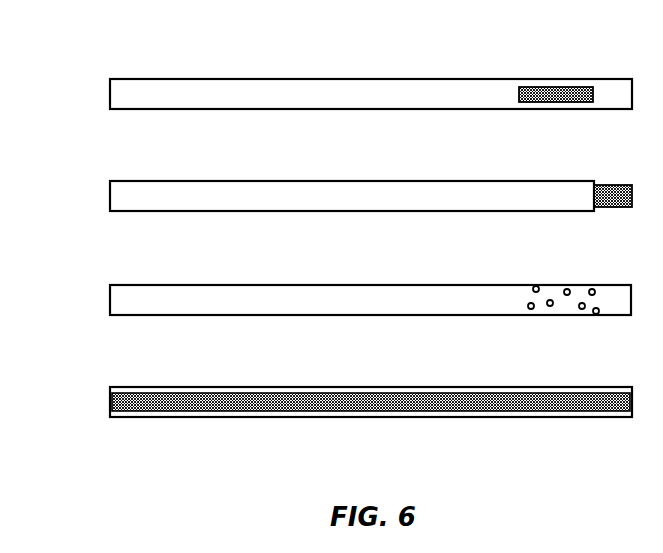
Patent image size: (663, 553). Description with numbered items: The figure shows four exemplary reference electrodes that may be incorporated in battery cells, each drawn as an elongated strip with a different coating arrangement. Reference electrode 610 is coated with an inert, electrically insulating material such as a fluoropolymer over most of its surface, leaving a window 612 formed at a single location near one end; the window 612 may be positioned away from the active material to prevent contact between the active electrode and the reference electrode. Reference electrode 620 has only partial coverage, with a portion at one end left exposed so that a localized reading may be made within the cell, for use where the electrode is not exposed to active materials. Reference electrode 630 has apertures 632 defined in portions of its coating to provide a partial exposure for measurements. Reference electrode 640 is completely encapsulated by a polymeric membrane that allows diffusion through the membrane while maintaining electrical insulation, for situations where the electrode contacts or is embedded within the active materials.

The reference electrode 610 is at (110, 91).
The window 612 is at (557, 86).
The reference electrode 620 is at (110, 193).
The reference electrode 630 is at (110, 297).
The apertures 632 is at (553, 300).
The reference electrode 640 is at (110, 399).